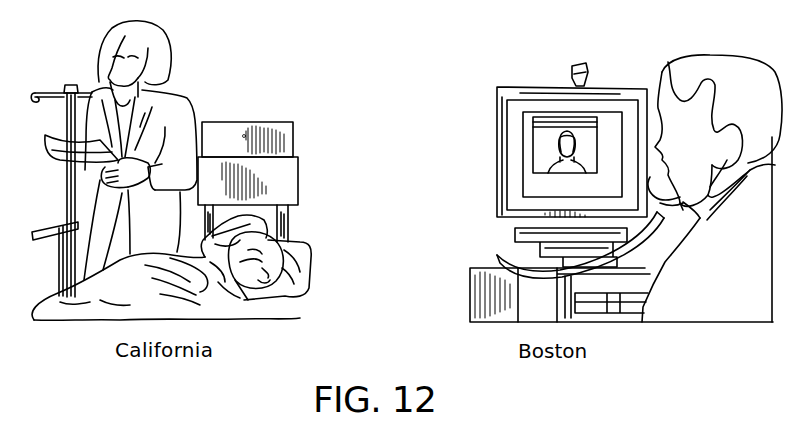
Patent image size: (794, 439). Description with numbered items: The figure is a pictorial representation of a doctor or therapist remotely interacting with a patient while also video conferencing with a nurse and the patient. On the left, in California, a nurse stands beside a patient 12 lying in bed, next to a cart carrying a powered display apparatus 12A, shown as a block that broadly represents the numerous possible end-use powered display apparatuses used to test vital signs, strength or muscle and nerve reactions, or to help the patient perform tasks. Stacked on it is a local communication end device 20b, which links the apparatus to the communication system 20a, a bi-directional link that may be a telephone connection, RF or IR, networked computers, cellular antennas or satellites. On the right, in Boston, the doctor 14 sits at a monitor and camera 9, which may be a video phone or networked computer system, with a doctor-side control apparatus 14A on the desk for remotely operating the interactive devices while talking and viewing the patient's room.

The communication system 20a is at (497, 142).
The local communication end device 20b is at (293, 144).
The powered display apparatus 12A is at (298, 187).
The patient 12 is at (307, 272).
The monitor/camera 9 is at (497, 167).
The doctor 14 is at (670, 63).
The doctor-side control apparatus 14A is at (470, 268).